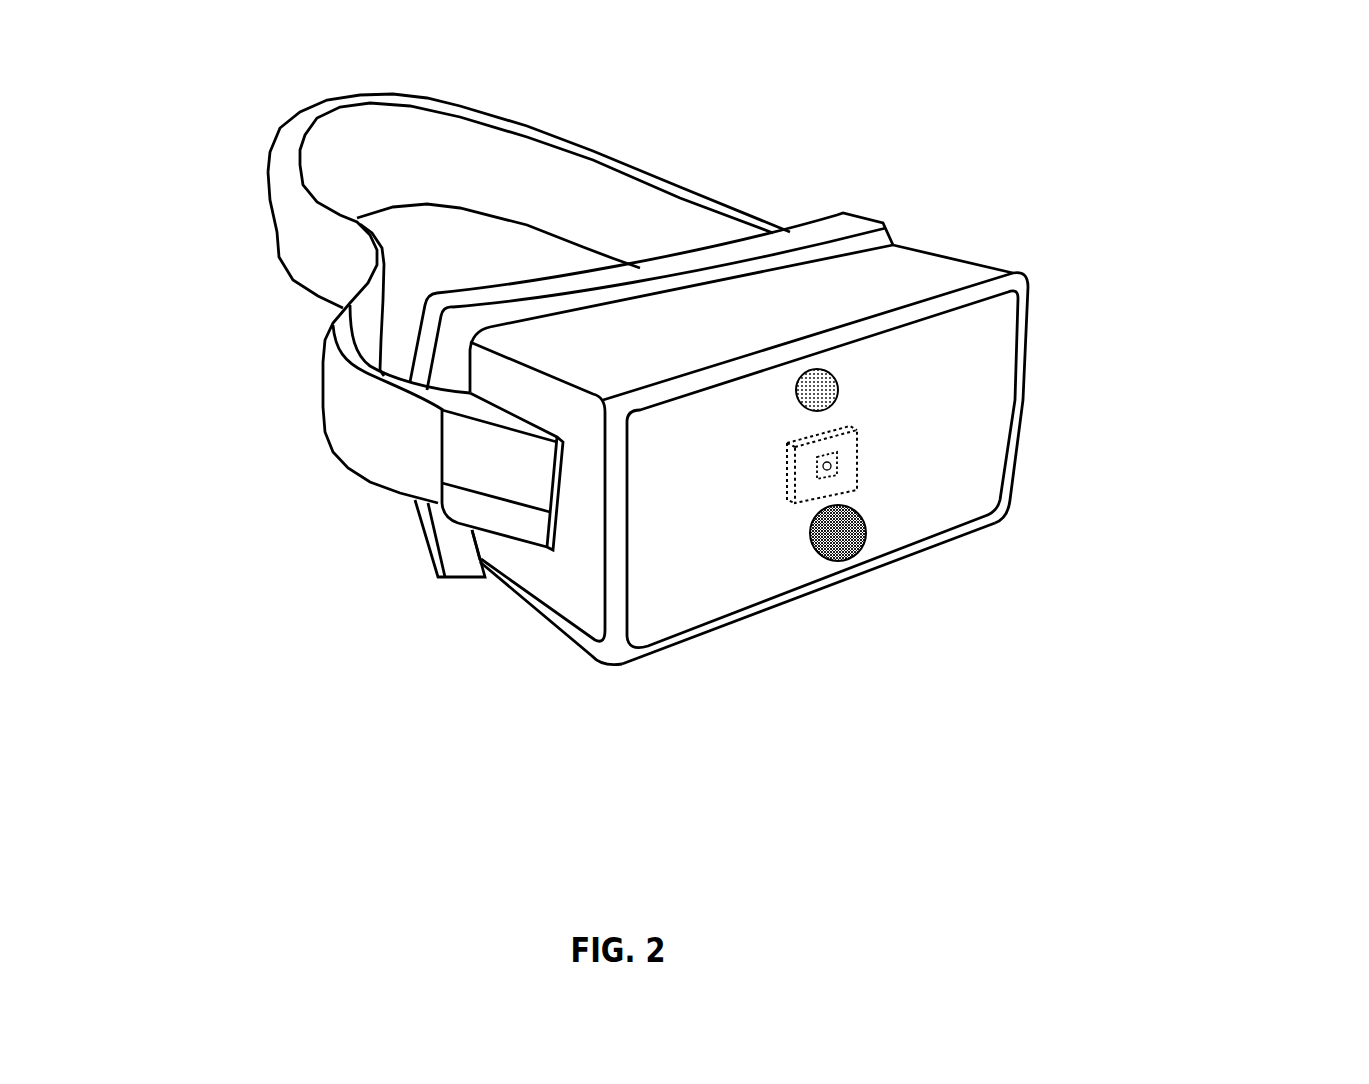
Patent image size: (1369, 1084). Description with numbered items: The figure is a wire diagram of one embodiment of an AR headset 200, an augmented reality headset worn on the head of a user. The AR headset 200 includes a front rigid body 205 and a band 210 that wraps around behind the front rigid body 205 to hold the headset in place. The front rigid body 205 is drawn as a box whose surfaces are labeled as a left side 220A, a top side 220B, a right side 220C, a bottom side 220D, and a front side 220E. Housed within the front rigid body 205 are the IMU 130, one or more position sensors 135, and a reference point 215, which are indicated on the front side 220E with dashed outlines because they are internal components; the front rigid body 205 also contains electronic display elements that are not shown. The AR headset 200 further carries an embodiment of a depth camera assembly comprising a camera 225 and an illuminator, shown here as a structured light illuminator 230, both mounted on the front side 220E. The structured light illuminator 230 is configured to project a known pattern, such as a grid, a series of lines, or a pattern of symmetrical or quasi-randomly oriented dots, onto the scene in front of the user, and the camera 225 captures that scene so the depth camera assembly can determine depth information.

The AR headset 200 is at (158, 91).
The front rigid body 205 is at (1019, 274).
The band 210 is at (653, 175).
The IMU 130 is at (850, 427).
The position sensors 135 is at (865, 455).
The reference point 215 is at (850, 474).
The left side 220A is at (983, 263).
The top side 220B is at (570, 338).
The right side 220C is at (571, 575).
The bottom side 220D is at (520, 622).
The front side 220E is at (666, 622).
The camera 225 is at (860, 547).
The structured light (SL) illuminator 230 is at (803, 413).